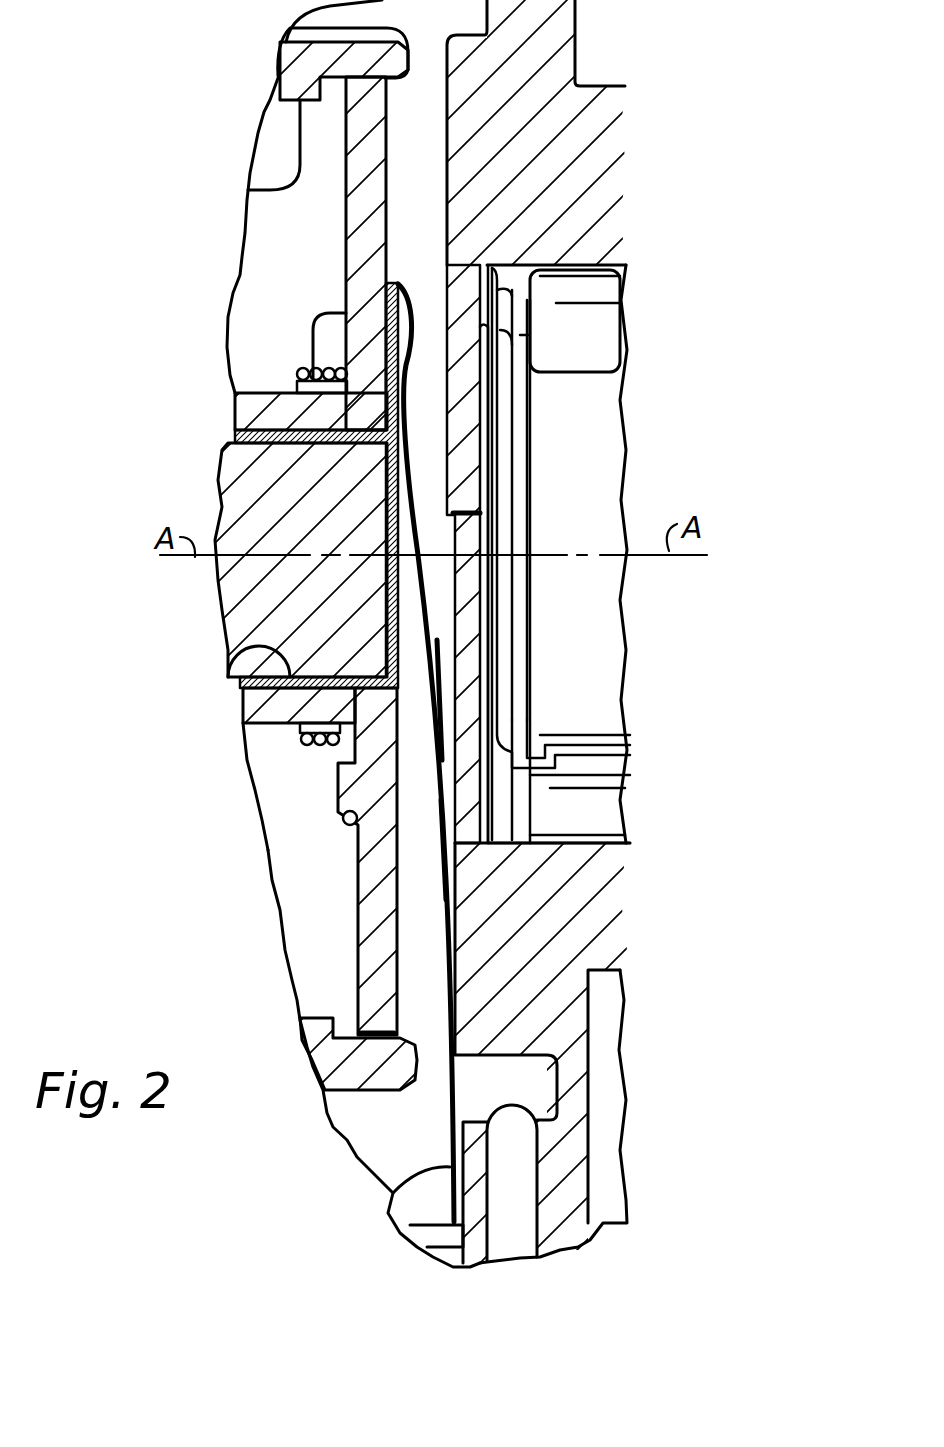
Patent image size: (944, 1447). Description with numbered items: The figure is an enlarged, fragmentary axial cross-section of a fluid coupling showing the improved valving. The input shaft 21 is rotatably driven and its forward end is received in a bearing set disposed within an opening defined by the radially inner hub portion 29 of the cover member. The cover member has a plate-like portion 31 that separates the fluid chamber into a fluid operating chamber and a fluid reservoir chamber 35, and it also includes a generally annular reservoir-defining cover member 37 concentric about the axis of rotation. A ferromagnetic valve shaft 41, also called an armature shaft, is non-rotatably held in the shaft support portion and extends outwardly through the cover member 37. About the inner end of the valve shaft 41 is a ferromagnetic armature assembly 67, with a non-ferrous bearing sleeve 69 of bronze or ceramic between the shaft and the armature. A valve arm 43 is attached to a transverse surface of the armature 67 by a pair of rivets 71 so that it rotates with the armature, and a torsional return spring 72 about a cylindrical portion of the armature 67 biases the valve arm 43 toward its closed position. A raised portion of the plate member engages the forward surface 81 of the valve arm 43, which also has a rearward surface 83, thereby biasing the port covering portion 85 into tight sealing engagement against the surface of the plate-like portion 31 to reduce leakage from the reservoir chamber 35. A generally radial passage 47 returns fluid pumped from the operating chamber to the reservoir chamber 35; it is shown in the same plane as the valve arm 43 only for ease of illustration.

The input shaft 21 is at (577, 468).
The radially inner hub portion 29 is at (575, 897).
The plate-like portion 31 is at (467, 655).
The fluid reservoir chamber 35 is at (415, 228).
The reservoir-defining cover member 37 is at (362, 59).
The valve shaft 41 is at (275, 505).
The valve arm 43 is at (447, 532).
The radial passage 47 is at (523, 1210).
The armature assembly 67 is at (380, 907).
The bearing sleeve 69 is at (240, 643).
The rivets 71 is at (330, 330).
The torsional return spring 72 is at (298, 378).
The forward surface 81 is at (443, 840).
The rearward surface 83 is at (445, 685).
The port covering portion 85 is at (392, 1195).